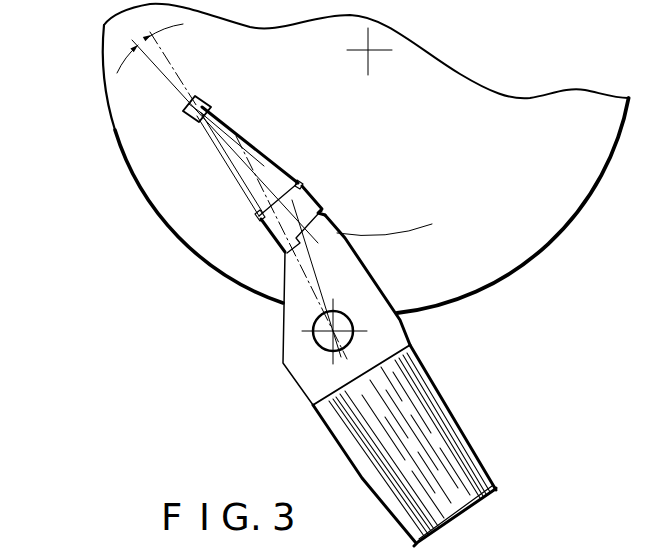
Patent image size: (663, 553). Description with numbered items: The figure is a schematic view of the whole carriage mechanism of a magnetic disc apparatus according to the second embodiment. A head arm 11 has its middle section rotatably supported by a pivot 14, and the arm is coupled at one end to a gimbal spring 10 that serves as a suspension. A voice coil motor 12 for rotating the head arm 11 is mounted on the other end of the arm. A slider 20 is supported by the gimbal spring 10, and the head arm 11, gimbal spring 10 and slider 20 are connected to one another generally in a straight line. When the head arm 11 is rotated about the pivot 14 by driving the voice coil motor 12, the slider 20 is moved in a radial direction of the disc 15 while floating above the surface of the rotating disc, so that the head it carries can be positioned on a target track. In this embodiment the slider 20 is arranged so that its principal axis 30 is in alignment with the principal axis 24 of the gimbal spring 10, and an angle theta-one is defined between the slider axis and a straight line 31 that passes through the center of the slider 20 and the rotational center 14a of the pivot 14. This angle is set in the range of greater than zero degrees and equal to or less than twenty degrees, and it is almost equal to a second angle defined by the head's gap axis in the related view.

The gimbal spring 10 is at (246, 183).
The head arm 11 is at (302, 387).
The voice coil motor 12 is at (466, 466).
The pivot 14 is at (319, 345).
The rotational center 14a is at (352, 324).
The disc 15 is at (542, 241).
The slider 20 is at (186, 112).
The principal axis of spring 24 is at (262, 157).
The principal axis of slider 30 is at (168, 78).
The straight line 31 is at (177, 71).